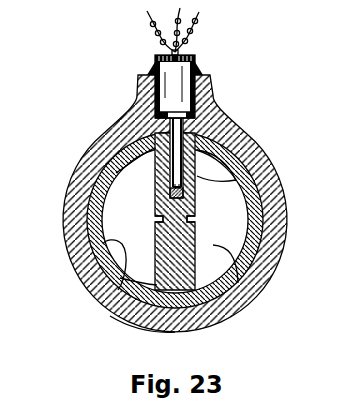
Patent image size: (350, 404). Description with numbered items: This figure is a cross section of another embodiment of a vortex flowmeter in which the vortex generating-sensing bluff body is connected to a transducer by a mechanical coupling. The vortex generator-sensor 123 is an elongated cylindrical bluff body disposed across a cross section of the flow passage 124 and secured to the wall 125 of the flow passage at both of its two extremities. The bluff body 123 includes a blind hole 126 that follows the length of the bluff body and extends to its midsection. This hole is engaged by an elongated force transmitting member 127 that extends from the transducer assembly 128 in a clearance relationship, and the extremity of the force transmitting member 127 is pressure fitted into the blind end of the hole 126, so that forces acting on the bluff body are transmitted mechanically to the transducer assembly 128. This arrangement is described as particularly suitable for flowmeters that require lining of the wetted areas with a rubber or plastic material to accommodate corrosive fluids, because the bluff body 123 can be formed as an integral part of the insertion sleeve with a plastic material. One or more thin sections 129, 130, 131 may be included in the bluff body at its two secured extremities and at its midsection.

The vortex generator-sensor 123 is at (153, 187).
The flow passage 124 is at (239, 283).
The wall of the flow passage 125 is at (118, 290).
The blind hole 126 is at (203, 165).
The elongated force transmitting member 127 is at (229, 132).
The transducer assembly 128 is at (173, 89).
The thin section 129 is at (107, 146).
The thin section 130 is at (200, 216).
The thin section 131 is at (118, 297).